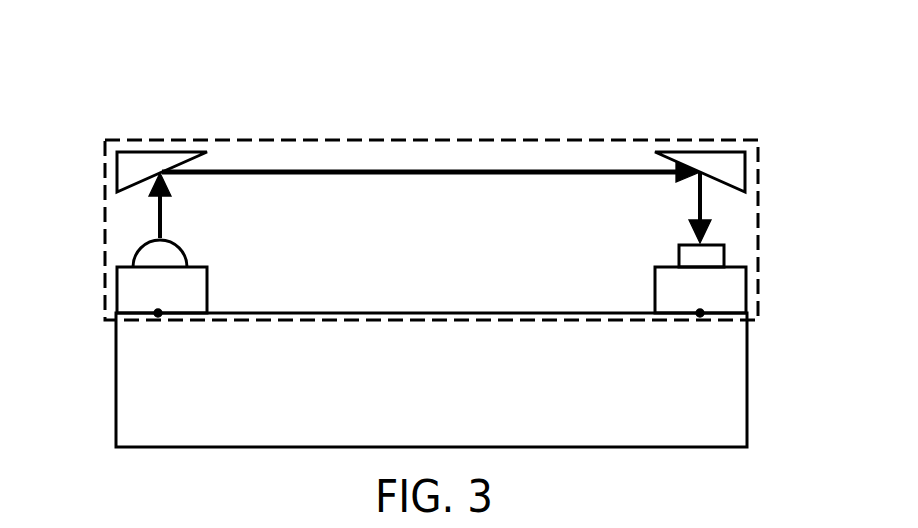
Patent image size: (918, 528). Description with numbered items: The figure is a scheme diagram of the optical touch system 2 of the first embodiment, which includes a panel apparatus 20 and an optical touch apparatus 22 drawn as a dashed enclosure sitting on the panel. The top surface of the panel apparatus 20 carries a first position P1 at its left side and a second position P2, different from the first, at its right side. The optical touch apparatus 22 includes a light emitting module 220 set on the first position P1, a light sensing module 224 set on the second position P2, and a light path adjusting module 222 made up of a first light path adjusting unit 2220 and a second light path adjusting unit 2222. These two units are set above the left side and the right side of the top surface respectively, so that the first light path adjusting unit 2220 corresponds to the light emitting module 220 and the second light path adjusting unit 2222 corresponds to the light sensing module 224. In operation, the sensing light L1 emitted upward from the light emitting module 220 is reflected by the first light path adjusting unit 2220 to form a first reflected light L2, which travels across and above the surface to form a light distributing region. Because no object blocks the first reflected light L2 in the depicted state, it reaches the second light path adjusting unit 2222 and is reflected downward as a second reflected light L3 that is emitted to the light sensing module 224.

The optical touch system 2 is at (703, 60).
The panel apparatus 20 is at (115, 367).
The optical touch apparatus 22 is at (757, 183).
The light emitting module 220 is at (193, 267).
The light path adjusting module 222 is at (431, 109).
The first light path adjusting unit 2220 is at (200, 150).
The second light path adjusting unit 2222 is at (655, 139).
The light sensing module 224 is at (747, 285).
The first position P1 is at (158, 312).
The second position P2 is at (700, 313).
The sensing light L1 is at (146, 207).
The first reflected light L2 is at (431, 190).
The second reflected light L3 is at (686, 207).